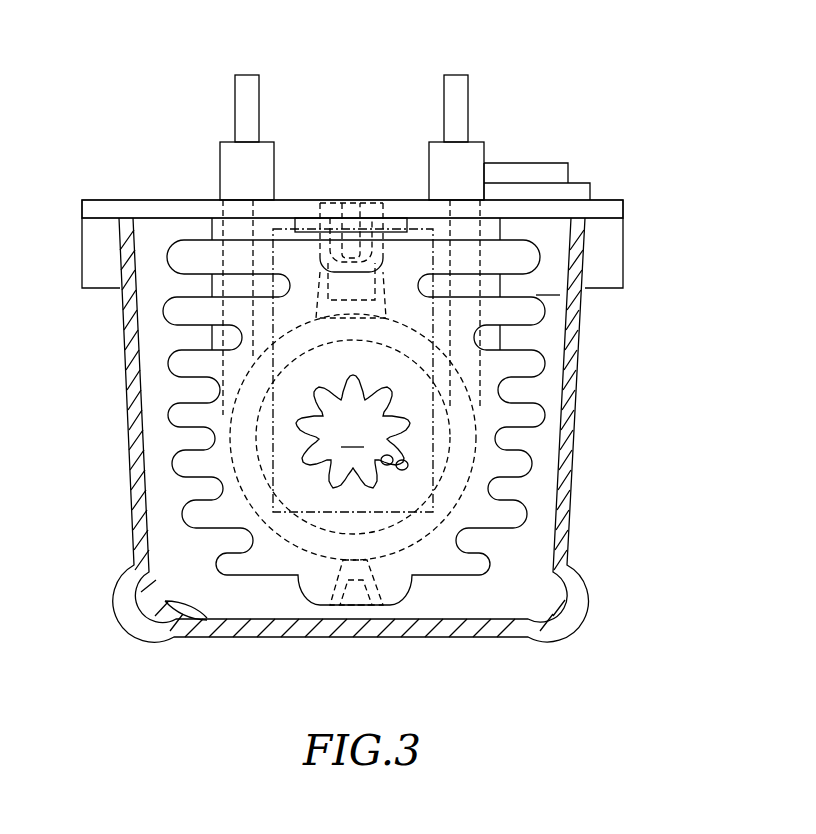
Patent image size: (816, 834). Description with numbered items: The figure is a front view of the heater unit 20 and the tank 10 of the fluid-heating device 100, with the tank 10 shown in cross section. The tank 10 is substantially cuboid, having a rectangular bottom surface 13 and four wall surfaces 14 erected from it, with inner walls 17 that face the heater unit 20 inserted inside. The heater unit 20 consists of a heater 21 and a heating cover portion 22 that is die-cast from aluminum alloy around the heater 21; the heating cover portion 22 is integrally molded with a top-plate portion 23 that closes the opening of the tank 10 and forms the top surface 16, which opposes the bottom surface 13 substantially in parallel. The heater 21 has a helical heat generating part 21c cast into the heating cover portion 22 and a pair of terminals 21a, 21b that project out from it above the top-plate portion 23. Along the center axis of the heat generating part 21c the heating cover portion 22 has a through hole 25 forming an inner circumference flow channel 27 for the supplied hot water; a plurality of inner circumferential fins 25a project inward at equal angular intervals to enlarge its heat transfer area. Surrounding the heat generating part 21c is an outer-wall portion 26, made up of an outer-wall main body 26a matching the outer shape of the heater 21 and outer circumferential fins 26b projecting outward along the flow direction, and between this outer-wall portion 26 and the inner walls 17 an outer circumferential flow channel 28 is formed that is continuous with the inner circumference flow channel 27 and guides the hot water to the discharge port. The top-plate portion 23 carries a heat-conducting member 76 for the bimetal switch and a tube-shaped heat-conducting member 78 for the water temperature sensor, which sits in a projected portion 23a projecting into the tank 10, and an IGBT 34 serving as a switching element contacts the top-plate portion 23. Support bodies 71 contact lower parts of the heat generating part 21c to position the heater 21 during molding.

The fluid-heating device 100 is at (585, 78).
The tank 10 is at (122, 353).
The bottom surface 13 is at (165, 601).
The wall surfaces 14 is at (135, 510).
The top surface 16 is at (168, 220).
The inner walls 17 is at (557, 366).
The heater unit 20 is at (536, 253).
The heater 21 is at (267, 532).
The terminal 21a is at (457, 100).
The terminal 21b is at (247, 100).
The heat generating part 21c is at (298, 534).
The heating cover portion 22 is at (230, 575).
The top-plate portion 23 is at (153, 205).
The projected portion 23a is at (397, 228).
The through hole 25 is at (404, 470).
The inner circumferential fins 25a is at (388, 465).
The outer-wall portion 26 is at (645, 448).
The outer-wall main body 26a is at (489, 488).
The outer circumferential fins 26b is at (530, 465).
The inner circumference flow channel 27 is at (353, 431).
The outer circumferential flow channel 28 is at (548, 284).
The IGBT 34 is at (520, 172).
The support bodies 71 is at (362, 592).
The heat-conducting member 76 is at (332, 212).
The heat-conducting member 78 is at (340, 205).